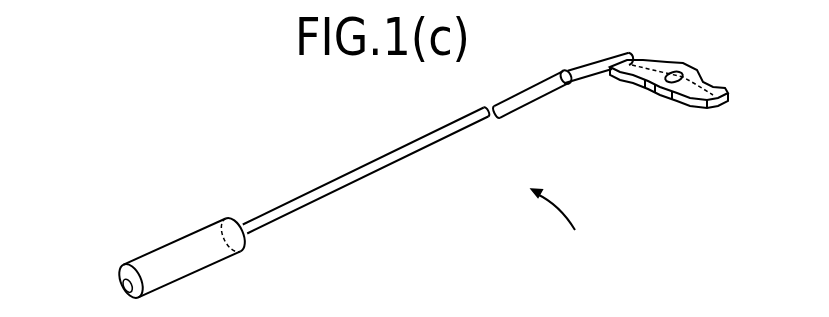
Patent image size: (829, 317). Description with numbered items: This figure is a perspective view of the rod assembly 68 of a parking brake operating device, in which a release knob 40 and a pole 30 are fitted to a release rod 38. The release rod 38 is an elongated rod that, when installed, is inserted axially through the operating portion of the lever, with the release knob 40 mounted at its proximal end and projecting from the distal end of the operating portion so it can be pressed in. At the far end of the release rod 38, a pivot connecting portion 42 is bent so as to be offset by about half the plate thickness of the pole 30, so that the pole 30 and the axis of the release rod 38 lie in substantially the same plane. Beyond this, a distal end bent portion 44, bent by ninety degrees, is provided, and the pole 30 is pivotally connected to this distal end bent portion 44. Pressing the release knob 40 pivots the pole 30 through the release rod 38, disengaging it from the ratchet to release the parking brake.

The pole 30 is at (678, 97).
The release rod 38 is at (363, 172).
The release knob 40 is at (170, 253).
The pivot connecting portion 42 is at (587, 68).
The distal end bent portion 44 is at (637, 56).
The rod assembly 68 is at (566, 217).